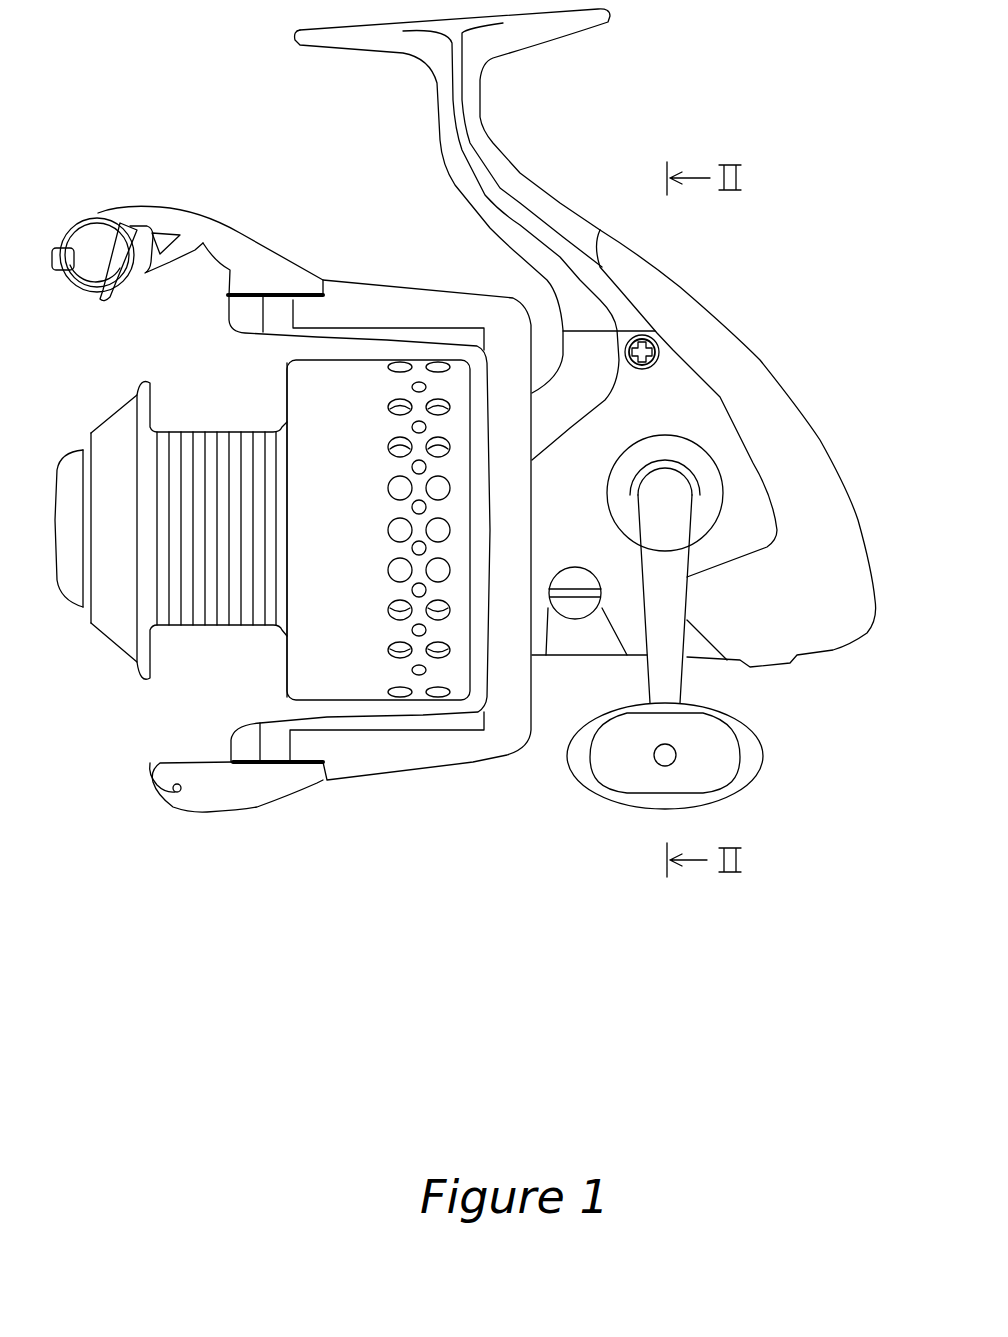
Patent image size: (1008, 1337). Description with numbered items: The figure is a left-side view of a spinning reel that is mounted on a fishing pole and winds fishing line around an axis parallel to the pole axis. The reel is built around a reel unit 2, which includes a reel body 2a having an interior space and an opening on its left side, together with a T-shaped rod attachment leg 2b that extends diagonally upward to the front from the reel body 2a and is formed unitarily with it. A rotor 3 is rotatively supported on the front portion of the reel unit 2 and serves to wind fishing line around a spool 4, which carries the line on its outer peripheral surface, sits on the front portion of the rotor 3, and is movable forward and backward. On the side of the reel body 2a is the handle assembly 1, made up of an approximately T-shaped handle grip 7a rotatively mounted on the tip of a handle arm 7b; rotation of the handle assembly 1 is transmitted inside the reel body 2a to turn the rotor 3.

The handle assembly 1 is at (705, 622).
The reel unit 2 is at (590, 187).
The reel body 2a is at (695, 423).
The rod attachment leg 2b is at (477, 125).
The rotor 3 is at (433, 297).
The spool 4 is at (207, 603).
The handle grip 7a is at (753, 757).
The handle arm 7b is at (670, 593).